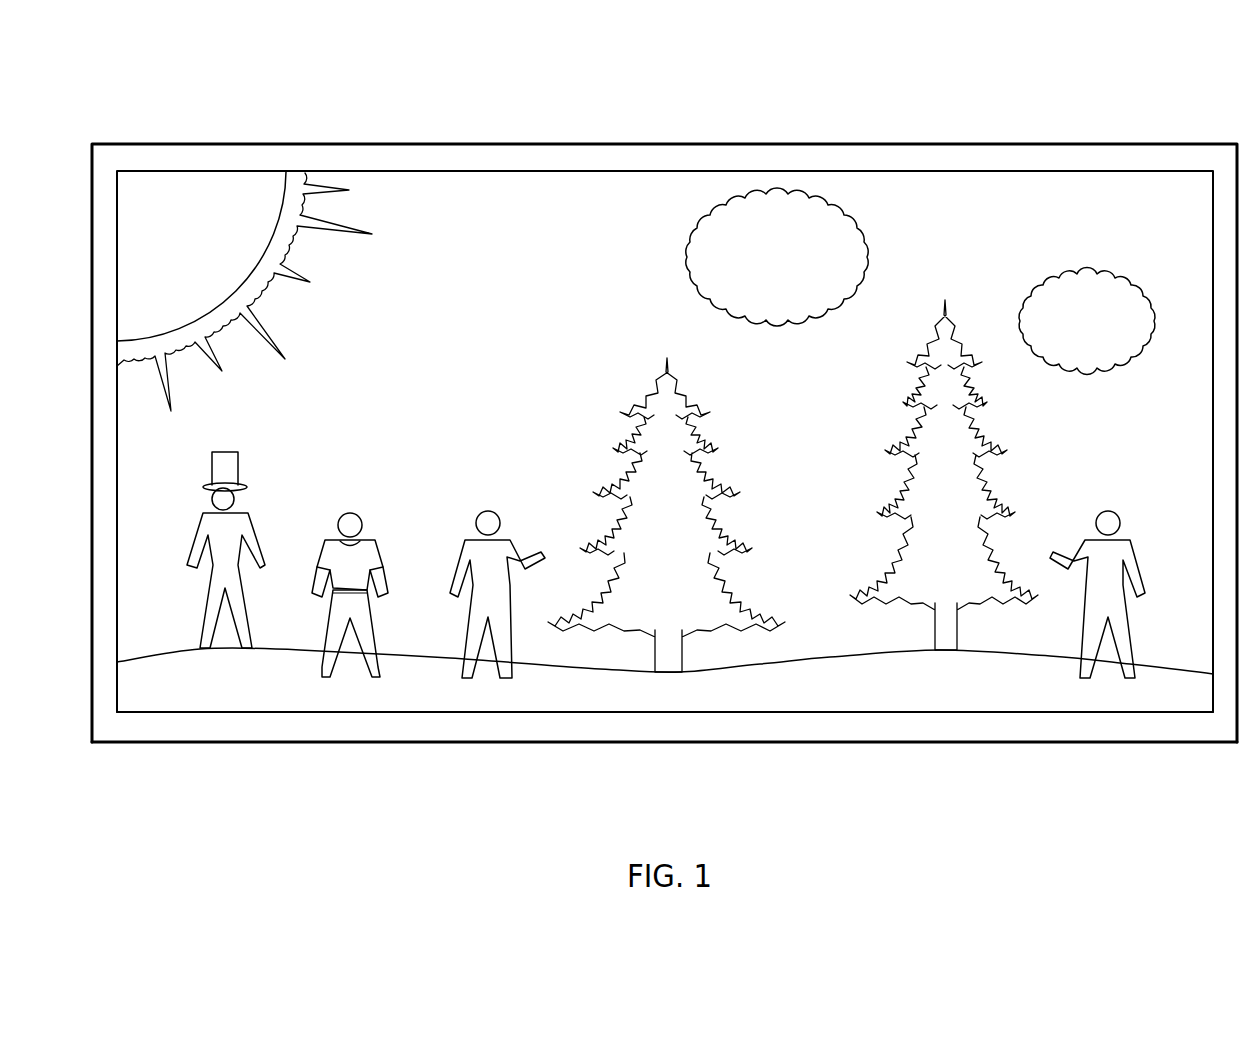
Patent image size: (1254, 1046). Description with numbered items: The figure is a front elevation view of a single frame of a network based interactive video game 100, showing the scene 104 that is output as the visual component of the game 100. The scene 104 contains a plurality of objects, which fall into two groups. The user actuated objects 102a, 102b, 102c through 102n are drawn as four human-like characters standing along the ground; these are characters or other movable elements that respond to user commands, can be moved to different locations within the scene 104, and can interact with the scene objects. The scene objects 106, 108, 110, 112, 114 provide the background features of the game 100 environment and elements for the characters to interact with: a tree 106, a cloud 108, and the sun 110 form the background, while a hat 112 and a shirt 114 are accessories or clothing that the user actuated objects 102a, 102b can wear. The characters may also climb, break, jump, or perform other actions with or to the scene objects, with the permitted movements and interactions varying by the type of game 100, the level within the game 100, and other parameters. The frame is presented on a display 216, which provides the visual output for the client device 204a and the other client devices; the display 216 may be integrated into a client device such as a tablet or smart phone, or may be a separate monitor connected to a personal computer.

The game 100 is at (1140, 118).
The user actuated object 102a is at (237, 497).
The user actuated object 102b is at (352, 512).
The user actuated object 102c is at (495, 512).
The user actuated object 102n is at (1118, 520).
The scene 104 is at (459, 238).
The scene object 106 is at (688, 473).
The scene object 108 is at (820, 287).
The scene object 110 is at (238, 308).
The scene object 112 is at (227, 458).
The scene object 114 is at (367, 552).
The client device 204a is at (623, 723).
The display 216 is at (988, 693).